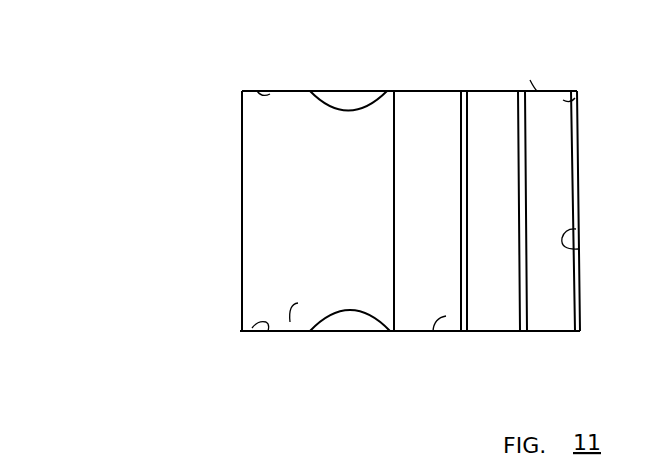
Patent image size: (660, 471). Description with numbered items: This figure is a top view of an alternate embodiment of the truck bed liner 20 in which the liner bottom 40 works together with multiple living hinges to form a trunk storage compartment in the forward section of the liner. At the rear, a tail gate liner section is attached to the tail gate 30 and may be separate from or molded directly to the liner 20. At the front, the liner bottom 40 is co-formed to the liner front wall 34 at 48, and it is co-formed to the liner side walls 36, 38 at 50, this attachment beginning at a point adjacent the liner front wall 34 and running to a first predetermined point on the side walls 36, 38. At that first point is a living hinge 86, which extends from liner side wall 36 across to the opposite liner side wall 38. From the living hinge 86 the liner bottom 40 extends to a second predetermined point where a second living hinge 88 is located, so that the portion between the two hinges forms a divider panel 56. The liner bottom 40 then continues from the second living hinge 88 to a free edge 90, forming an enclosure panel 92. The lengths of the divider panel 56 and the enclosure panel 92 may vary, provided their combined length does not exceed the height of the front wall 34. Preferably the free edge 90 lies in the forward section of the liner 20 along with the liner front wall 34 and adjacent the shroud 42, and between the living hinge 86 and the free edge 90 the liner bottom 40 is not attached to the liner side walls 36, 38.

The liner 20 is at (582, 202).
The tail gate 30 is at (240, 196).
The liner front wall 34 is at (578, 249).
The liner side wall 36 is at (258, 91).
The liner side wall 38 is at (252, 328).
The liner bottom 40 is at (290, 322).
The shroud 42 is at (350, 101).
The co-forming location to front wall 48 is at (563, 100).
The co-forming location to side walls 50 is at (530, 80).
The divider panel 56 is at (507, 315).
The living hinge 86 is at (524, 331).
The second living hinge 88 is at (465, 332).
The free edge 90 is at (396, 320).
The enclosure panel 92 is at (433, 331).